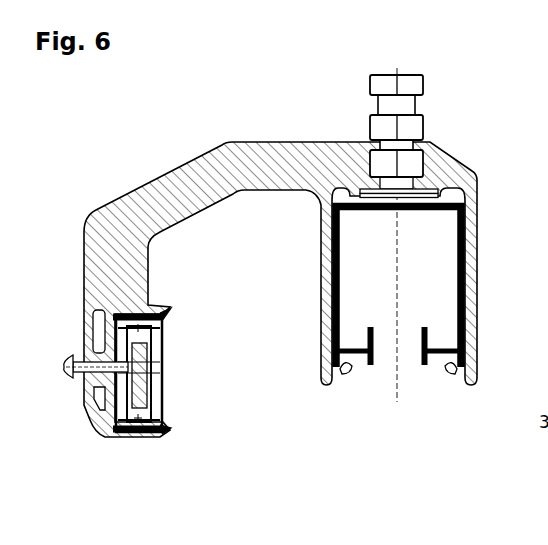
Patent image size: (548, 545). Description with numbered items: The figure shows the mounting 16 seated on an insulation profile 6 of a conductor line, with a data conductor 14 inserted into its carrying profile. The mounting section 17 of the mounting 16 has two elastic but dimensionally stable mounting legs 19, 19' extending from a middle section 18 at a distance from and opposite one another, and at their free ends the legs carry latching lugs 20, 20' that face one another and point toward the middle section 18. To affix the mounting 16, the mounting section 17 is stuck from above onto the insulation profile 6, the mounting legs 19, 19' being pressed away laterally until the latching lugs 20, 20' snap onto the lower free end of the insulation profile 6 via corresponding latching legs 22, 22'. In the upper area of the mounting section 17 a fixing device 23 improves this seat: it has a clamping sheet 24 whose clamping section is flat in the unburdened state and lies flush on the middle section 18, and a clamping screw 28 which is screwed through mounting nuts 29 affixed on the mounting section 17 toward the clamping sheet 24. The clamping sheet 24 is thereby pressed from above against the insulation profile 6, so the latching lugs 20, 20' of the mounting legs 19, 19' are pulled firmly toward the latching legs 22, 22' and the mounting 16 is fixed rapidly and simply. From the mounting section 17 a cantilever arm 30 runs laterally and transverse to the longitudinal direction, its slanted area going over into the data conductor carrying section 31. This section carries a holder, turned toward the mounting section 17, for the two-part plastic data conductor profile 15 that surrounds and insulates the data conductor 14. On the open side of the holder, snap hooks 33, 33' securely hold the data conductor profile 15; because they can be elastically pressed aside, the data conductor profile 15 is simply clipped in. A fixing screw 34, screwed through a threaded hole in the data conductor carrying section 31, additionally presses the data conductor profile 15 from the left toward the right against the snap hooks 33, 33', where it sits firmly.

The insulation profile 6 is at (341, 264).
The data conductor 14 is at (143, 397).
The data conductor profile 15 is at (165, 371).
The mounting 16 is at (93, 158).
The mounting section 17 is at (278, 140).
The middle section 18 is at (356, 157).
The mounting leg 19 is at (293, 295).
The mounting leg 19' is at (505, 295).
The latching lug 20 is at (365, 406).
The latching lug 20' is at (432, 406).
The latching leg 22 is at (316, 367).
The latching leg 22' is at (485, 364).
The fixing device 23 is at (382, 71).
The clamping sheet 24 is at (434, 190).
The clamping screw 28 is at (424, 80).
The mounting nuts 29 is at (414, 163).
The cantilever arm 30 is at (160, 183).
The data conductor carrying section 31 is at (105, 440).
The snap hook 33 is at (174, 427).
The snap hook 33' is at (176, 323).
The fixing screw 34 is at (65, 357).